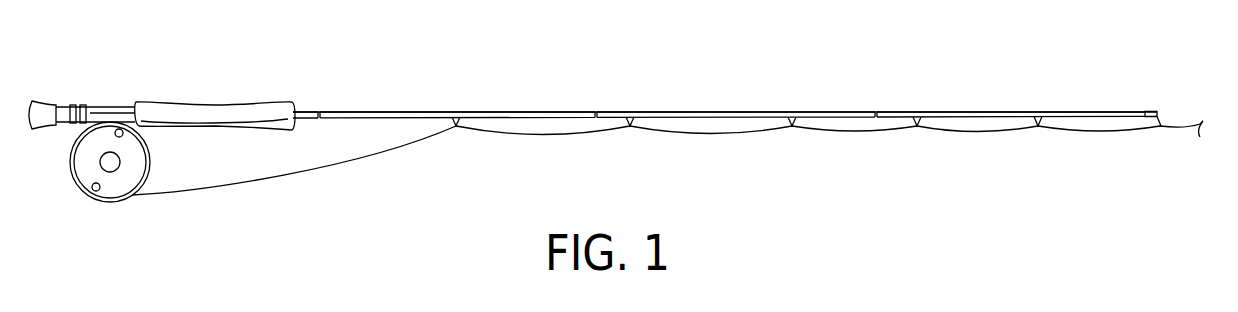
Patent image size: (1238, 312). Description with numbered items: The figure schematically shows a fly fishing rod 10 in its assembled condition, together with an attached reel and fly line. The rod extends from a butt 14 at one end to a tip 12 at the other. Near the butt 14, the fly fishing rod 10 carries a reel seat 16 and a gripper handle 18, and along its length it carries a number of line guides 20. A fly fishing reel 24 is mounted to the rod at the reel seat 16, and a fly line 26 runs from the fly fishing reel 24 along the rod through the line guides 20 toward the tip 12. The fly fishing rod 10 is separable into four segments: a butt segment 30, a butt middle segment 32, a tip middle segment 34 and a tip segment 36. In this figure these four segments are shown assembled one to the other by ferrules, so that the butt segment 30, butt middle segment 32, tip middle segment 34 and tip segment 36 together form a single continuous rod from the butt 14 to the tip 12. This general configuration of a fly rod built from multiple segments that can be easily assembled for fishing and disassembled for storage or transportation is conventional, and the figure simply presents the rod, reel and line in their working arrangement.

The fly fishing rod 10 is at (670, 108).
The tip 12 is at (1157, 112).
The butt 14 is at (43, 101).
The reel seat 16 is at (108, 108).
The gripper handle 18 is at (237, 110).
The line guides 20 is at (457, 128).
The fly fishing reel 24 is at (73, 177).
The fly line 26 is at (254, 190).
The butt segment 30 is at (310, 110).
The butt middle segment 32 is at (507, 110).
The tip middle segment 34 is at (765, 110).
The tip segment 36 is at (1010, 110).